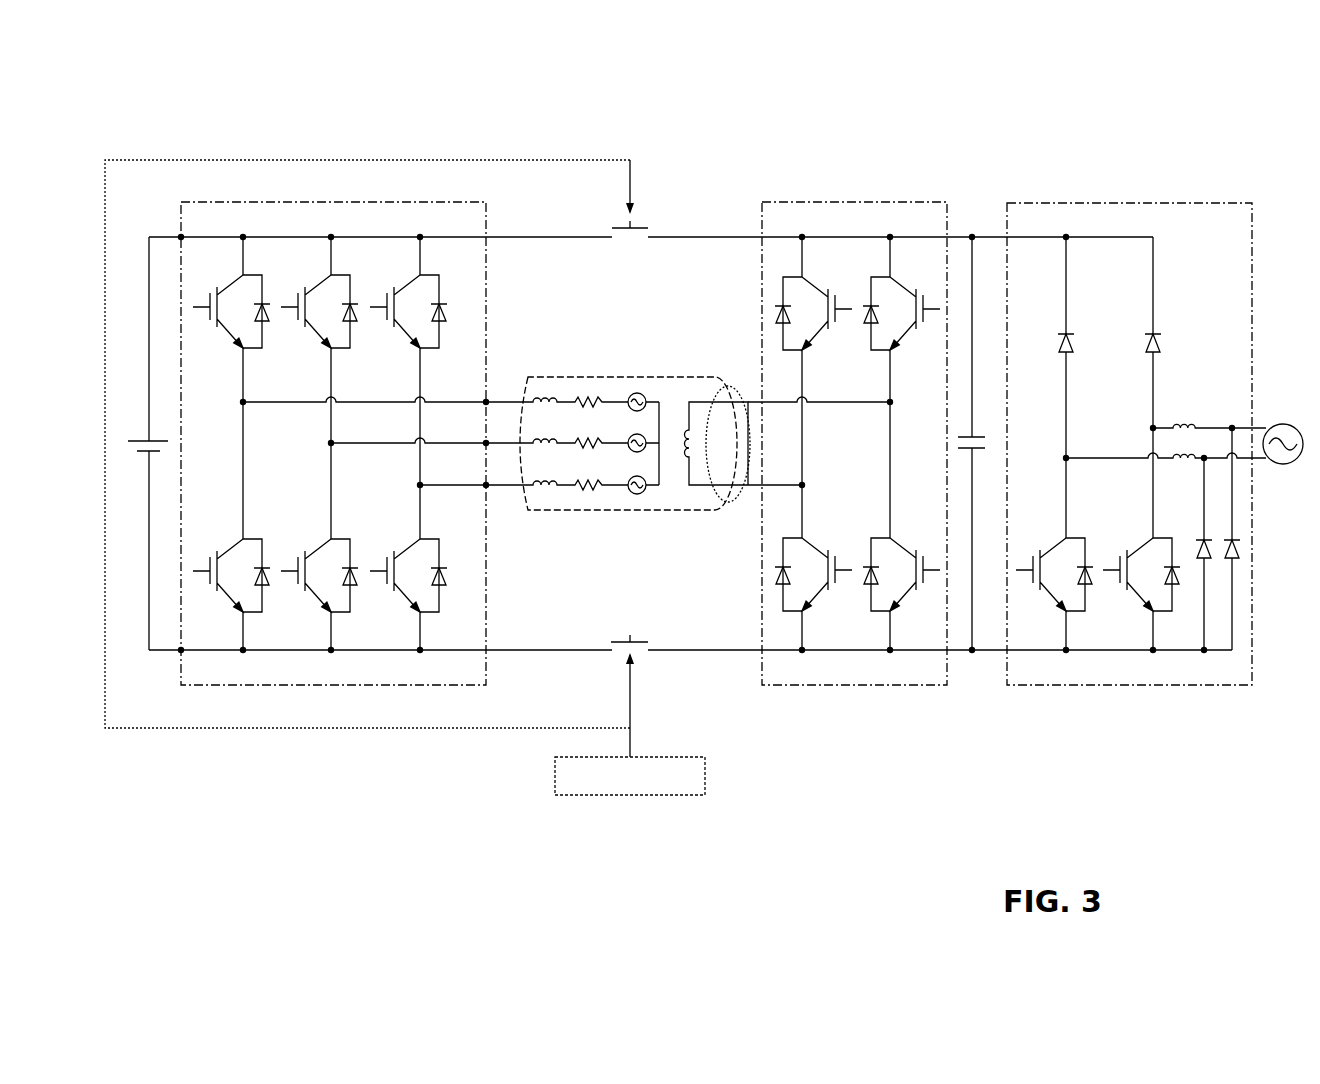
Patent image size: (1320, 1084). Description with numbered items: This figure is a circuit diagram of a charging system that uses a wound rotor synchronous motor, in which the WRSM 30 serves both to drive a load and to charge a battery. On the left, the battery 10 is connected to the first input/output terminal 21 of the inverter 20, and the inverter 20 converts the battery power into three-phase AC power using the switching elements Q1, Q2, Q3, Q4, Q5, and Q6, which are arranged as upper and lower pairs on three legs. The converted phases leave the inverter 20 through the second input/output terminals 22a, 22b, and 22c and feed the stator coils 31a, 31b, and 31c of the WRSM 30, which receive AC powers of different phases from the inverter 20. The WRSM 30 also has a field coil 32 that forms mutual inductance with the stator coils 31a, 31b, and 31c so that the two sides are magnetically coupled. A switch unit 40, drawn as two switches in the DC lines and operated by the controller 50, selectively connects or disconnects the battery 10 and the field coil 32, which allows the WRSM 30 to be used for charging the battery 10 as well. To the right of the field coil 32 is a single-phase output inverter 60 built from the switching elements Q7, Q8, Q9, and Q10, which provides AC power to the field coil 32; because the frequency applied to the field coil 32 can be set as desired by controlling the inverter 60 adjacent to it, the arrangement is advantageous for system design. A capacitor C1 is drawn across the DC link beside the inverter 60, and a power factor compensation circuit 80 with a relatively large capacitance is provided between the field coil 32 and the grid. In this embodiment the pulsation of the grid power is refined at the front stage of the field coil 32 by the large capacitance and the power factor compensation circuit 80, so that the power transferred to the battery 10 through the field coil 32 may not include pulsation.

The battery 10 is at (142, 441).
The inverter 20 is at (332, 389).
The first input/output terminal 21 is at (181, 237).
The second input/output terminal 22a is at (486, 402).
The second input/output terminal 22b is at (486, 445).
The second input/output terminal 22c is at (486, 487).
The WRSM 30 is at (589, 438).
The stator coil 31a is at (546, 395).
The stator coil 31b is at (538, 441).
The stator coil 31c is at (550, 490).
The field coil 32 is at (690, 458).
The switch unit 40 is at (645, 228).
The controller 50 is at (705, 777).
The single-phase output inverter 60 is at (854, 412).
The power factor compensation circuit 80 is at (1155, 203).
The capacitor C1 is at (978, 443).
The switching element Q1 is at (231, 319).
The switching element Q2 is at (231, 582).
The switching element Q3 is at (319, 319).
The switching element Q4 is at (319, 582).
The switching element Q5 is at (408, 319).
The switching element Q6 is at (408, 582).
The switching element Q7 is at (901, 320).
The switching element Q8 is at (813, 582).
The switching element Q9 is at (901, 582).
The switching element Q10 is at (814, 320).